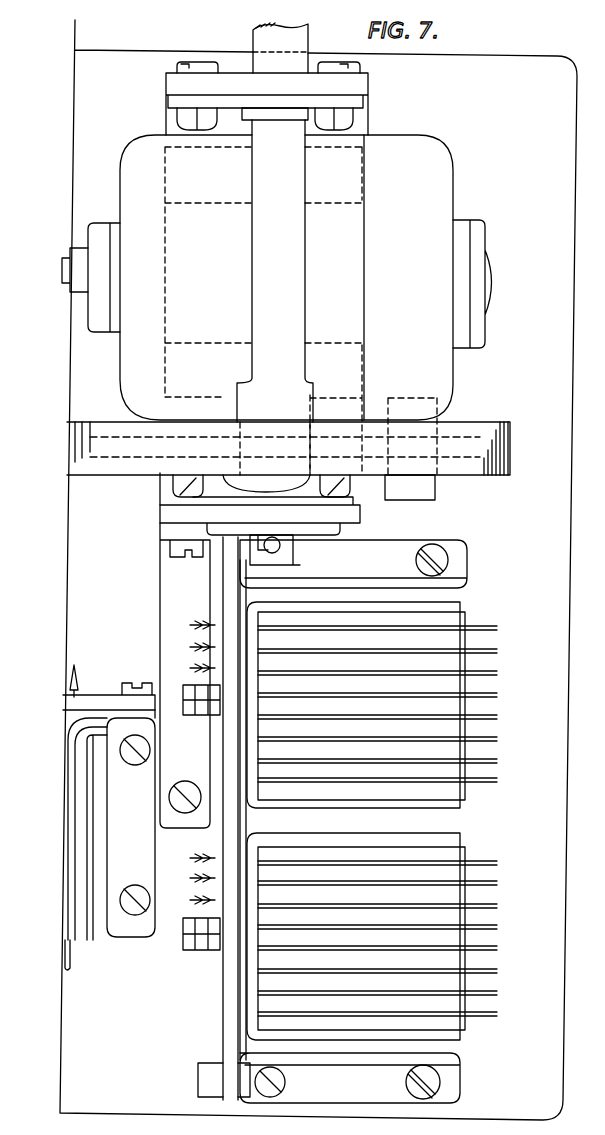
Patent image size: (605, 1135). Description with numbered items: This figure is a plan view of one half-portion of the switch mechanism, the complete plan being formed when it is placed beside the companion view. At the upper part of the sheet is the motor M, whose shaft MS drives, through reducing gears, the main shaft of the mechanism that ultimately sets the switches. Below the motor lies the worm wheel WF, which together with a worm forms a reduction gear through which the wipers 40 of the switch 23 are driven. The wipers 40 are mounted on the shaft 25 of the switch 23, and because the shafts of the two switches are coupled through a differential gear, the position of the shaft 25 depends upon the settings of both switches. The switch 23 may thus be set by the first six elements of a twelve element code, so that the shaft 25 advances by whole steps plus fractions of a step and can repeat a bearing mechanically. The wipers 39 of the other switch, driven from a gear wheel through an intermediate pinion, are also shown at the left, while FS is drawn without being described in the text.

The flexible shaft FS is at (296, 40).
The motor M is at (440, 178).
The shaft of motor MS is at (70, 243).
The shaft 25 is at (292, 280).
The worm wheel WF is at (530, 457).
The switch 23 is at (482, 625).
The wipers 40 is at (198, 610).
The wipers 39 is at (78, 672).